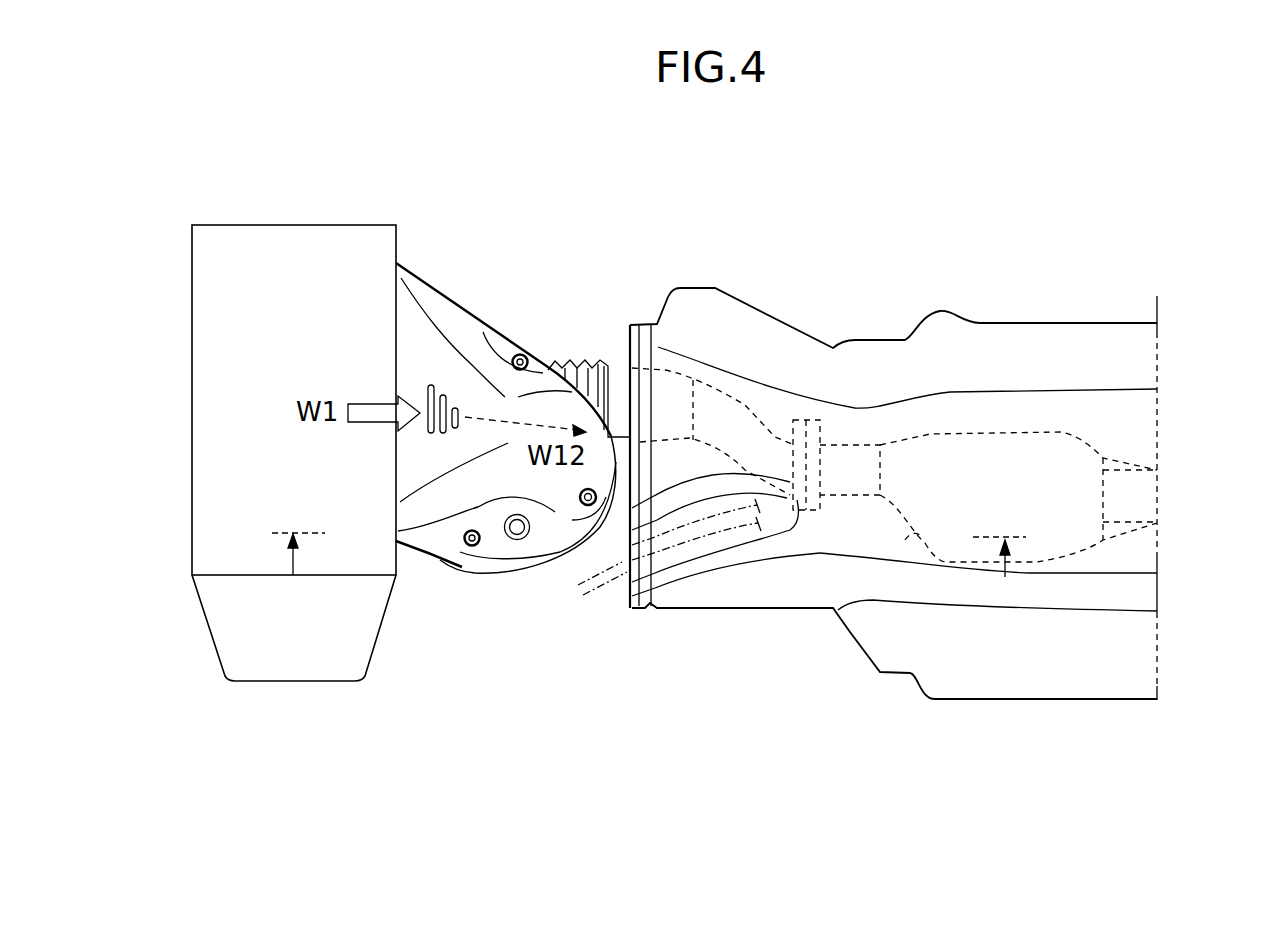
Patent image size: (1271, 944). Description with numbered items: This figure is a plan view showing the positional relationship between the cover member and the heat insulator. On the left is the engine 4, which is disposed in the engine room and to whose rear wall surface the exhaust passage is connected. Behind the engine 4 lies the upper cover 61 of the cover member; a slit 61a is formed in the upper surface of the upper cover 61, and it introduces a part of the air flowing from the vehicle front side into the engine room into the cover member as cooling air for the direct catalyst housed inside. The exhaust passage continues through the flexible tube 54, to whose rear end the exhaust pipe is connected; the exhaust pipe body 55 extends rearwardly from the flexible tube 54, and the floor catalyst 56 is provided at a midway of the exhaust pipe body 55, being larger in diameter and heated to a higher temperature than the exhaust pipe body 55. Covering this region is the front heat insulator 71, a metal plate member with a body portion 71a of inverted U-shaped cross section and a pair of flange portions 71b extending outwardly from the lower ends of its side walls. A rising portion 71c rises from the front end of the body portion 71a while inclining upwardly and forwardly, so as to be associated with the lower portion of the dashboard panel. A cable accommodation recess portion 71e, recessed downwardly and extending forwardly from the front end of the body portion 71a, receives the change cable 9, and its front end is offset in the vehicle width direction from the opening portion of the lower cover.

The engine 4 is at (301, 248).
The change cable 9 is at (604, 582).
The flexible tube 54 is at (577, 360).
The exhaust pipe body 55 is at (760, 414).
The floor catalyst 56 is at (905, 540).
The upper cover 61 is at (421, 540).
The slit 61a is at (422, 386).
The front heat insulator 71 is at (1148, 430).
The body portion 71a is at (1148, 556).
The flange portions 71b is at (1028, 345).
The rising portion 71c is at (673, 358).
The cable accommodation recess portion 71e is at (722, 545).